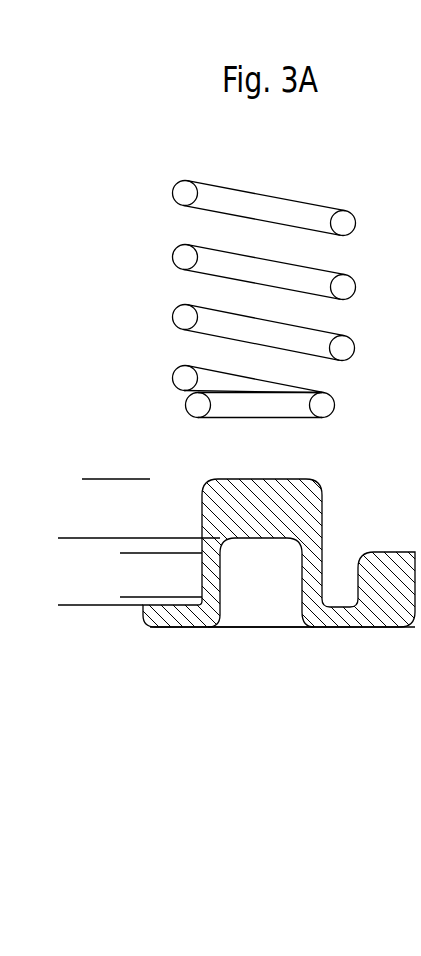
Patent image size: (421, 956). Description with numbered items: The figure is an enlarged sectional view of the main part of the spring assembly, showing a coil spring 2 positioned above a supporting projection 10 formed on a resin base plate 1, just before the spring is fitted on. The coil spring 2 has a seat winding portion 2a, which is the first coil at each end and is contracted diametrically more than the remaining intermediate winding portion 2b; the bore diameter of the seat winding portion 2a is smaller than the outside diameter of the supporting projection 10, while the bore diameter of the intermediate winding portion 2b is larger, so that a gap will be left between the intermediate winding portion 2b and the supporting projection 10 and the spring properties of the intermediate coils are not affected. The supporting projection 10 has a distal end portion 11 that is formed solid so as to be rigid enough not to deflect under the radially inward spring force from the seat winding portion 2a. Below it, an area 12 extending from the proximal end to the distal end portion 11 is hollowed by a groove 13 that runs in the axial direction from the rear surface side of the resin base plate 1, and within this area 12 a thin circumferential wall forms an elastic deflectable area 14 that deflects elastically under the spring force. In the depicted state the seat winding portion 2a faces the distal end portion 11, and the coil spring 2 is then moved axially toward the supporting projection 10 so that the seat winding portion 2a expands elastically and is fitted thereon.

The resin base plate 1 is at (377, 628).
The coil spring 2 is at (256, 284).
The seat winding portion 2a is at (187, 397).
The intermediate winding portion 2b is at (172, 312).
The supporting projection 10 is at (323, 499).
The distal end portion 11 is at (87, 479).
The area 12 is at (62, 538).
The groove 13 is at (260, 600).
The elastic deflectable area 14 is at (122, 553).